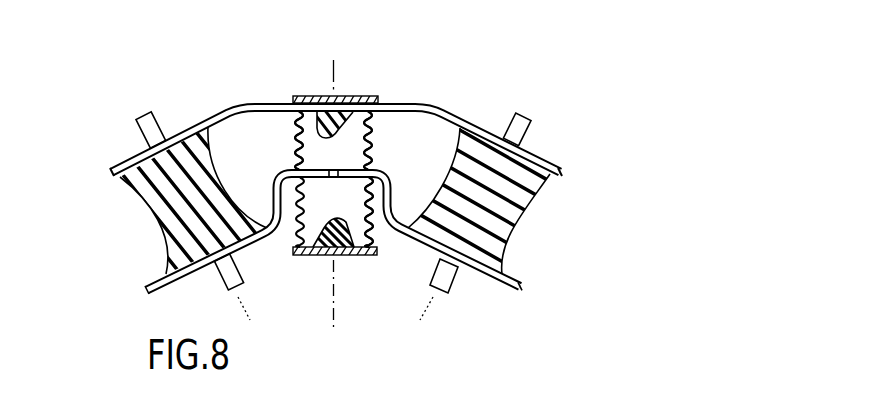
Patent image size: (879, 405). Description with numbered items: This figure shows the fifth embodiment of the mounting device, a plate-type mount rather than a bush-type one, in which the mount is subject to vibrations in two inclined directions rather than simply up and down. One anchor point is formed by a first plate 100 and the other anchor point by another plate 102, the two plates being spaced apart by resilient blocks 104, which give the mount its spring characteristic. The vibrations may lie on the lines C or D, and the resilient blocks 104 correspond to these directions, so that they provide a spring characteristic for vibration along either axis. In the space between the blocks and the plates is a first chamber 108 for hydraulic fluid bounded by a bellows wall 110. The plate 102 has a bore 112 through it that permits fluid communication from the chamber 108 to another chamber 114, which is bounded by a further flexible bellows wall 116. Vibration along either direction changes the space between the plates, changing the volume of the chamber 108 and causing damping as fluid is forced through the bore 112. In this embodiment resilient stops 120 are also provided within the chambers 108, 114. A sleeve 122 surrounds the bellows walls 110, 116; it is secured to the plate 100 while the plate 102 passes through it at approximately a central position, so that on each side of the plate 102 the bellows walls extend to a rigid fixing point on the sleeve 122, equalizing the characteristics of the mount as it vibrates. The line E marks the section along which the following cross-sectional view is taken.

The first plate 100 is at (543, 155).
The plate 102 is at (488, 273).
The resilient blocks 104 is at (191, 217).
The first chamber 108 is at (349, 141).
The bellows wall 110 is at (292, 137).
The bore 112 is at (372, 153).
The chamber 114 is at (325, 198).
The bellows wall 116 is at (381, 233).
The resilient stops 120 is at (329, 118).
The sleeve 122 is at (342, 97).
The line C is at (140, 113).
The line D is at (530, 106).
The line E— E is at (333, 195).